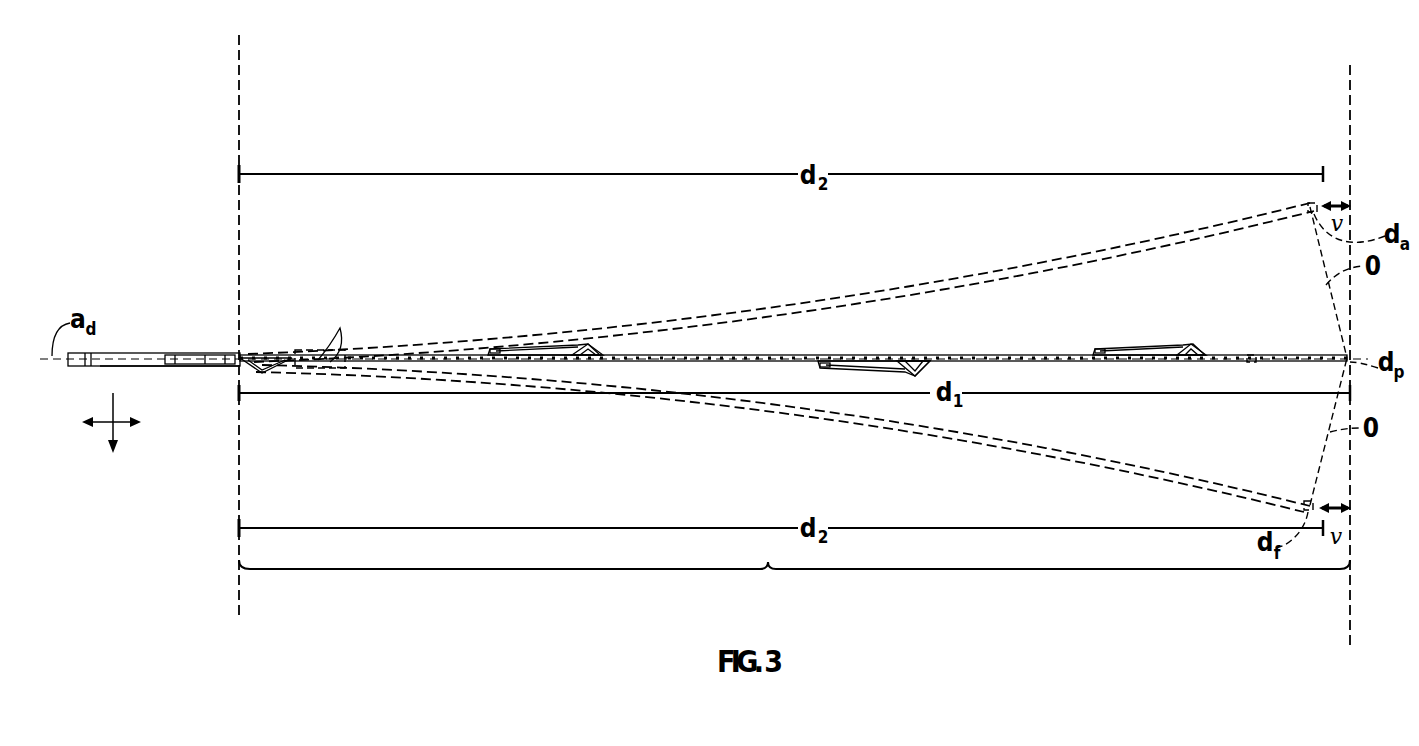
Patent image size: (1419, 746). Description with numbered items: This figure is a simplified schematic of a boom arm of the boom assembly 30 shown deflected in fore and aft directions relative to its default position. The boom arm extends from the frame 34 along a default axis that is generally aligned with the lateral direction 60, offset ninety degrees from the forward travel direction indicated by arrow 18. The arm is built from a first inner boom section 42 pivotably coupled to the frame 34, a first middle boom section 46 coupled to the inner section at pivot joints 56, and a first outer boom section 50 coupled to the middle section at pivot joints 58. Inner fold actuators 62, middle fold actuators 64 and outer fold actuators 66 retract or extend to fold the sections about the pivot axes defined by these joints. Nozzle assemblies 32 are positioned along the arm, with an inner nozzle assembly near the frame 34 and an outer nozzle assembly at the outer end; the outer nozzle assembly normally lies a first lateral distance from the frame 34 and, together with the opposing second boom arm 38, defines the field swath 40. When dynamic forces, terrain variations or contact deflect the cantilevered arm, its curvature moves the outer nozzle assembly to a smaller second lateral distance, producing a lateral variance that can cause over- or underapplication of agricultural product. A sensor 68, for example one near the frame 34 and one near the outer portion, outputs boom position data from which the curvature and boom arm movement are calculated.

The arrow 18 is at (113, 461).
The boom assembly 30 is at (160, 334).
The nozzle assemblies 32 is at (329, 346).
The frame 34 is at (157, 366).
The second boom arm 38 is at (794, 585).
The field swath 40 is at (1350, 617).
The first inner boom section 42 is at (380, 352).
The first middle boom section 46 is at (708, 353).
The first outer boom section 50 is at (1032, 353).
The pivot joints 56 is at (558, 363).
The pivot joints 58 is at (888, 365).
The lateral direction 60 is at (120, 425).
The inner fold actuators 62 is at (183, 352).
The middle fold actuators 64 is at (525, 345).
The outer fold actuators 66 is at (852, 361).
The sensor 68 is at (245, 355).